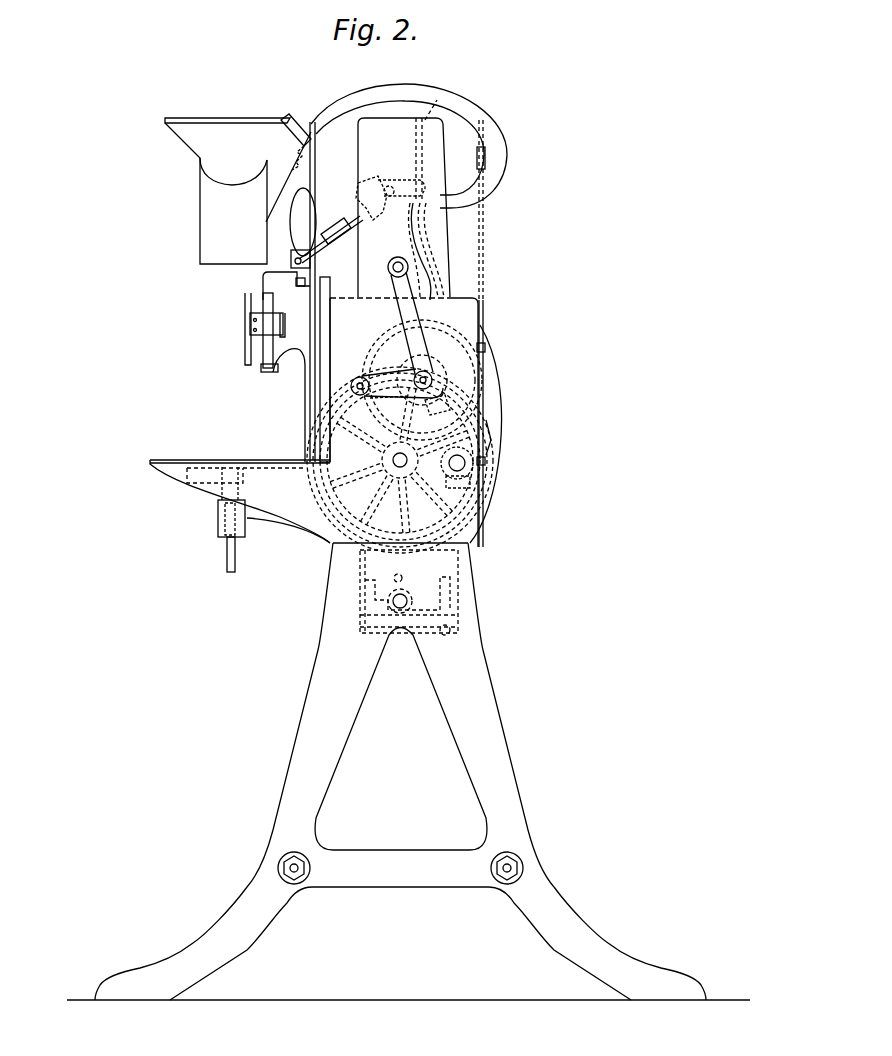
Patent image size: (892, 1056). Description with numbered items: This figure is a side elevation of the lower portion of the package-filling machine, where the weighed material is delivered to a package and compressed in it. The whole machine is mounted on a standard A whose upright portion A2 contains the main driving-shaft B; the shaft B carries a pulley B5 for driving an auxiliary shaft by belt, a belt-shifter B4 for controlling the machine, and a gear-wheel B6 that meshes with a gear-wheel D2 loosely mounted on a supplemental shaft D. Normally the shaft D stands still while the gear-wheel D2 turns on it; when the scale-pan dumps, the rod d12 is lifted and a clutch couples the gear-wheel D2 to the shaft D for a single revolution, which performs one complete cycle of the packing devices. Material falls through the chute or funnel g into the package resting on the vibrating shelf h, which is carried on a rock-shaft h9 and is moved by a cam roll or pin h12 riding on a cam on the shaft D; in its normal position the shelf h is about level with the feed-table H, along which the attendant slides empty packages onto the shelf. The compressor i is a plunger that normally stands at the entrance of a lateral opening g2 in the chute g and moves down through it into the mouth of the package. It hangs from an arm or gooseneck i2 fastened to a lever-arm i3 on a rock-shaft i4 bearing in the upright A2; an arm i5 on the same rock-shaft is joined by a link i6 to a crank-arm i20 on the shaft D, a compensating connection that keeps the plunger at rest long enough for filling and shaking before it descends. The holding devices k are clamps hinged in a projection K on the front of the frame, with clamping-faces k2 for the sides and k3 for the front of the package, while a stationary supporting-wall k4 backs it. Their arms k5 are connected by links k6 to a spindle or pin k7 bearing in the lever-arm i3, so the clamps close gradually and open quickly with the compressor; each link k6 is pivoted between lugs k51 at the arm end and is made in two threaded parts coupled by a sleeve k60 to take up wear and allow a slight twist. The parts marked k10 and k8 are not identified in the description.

The standard A is at (485, 668).
The upright portion A2 is at (440, 163).
The arm or gooseneck i2 is at (346, 102).
The rod d12 is at (437, 100).
The chute or funnel g is at (227, 191).
The lateral opening g2 is at (303, 163).
The compressor i is at (298, 118).
The spindle or pin k7 is at (368, 186).
The links k6 is at (308, 258).
The sleeve k60 is at (342, 213).
The lugs k51 is at (292, 260).
The arms k5 is at (262, 280).
The clamping-faces k3 is at (250, 317).
The holding devices k is at (250, 338).
The stationary supporting-wall k4 is at (260, 360).
The clamping-faces k2 is at (262, 372).
The belt-shifter B4 is at (286, 372).
The projection K is at (275, 374).
The lever-arm i3 is at (386, 246).
The arm i5 is at (465, 296).
The rock-shaft i4 is at (388, 270).
The gear-wheel D2 is at (458, 328).
The supplemental shaft D is at (437, 390).
The link i6 is at (362, 376).
The crank-arm i20 is at (390, 387).
The pawl k10 is at (440, 401).
The cam roll or pin h12 is at (487, 386).
The main driving-shaft B is at (392, 466).
The gear-wheel B6 is at (399, 461).
The pulley B5 is at (484, 447).
The rock-shaft h9 is at (463, 463).
The vibrating support or shelf h is at (212, 461).
The feed-table H is at (157, 467).
The hanger k8 is at (274, 518).